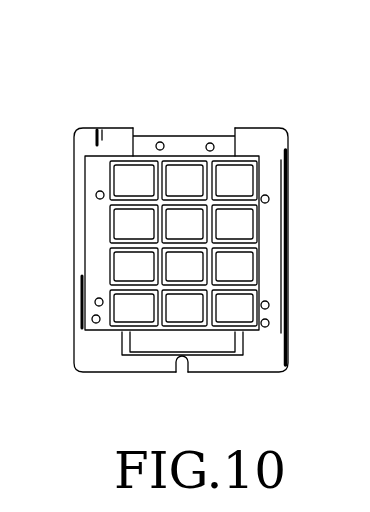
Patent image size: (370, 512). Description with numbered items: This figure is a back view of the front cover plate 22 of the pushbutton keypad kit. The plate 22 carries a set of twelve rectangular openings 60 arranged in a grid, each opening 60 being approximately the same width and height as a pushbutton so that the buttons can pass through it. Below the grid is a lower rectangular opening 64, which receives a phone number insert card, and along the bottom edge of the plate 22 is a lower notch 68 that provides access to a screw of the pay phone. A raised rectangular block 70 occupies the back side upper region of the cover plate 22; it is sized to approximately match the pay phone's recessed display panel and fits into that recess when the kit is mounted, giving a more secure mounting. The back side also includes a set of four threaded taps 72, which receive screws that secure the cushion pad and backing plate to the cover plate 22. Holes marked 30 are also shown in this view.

The front cover plate 22 is at (197, 84).
The mounting holes 30 is at (206, 144).
The rectangular openings 60 is at (137, 258).
The lower rectangular opening 64 is at (164, 350).
The lower notch 68 is at (185, 366).
The raised rectangular block 70 is at (236, 130).
The threaded taps 72 is at (100, 191).